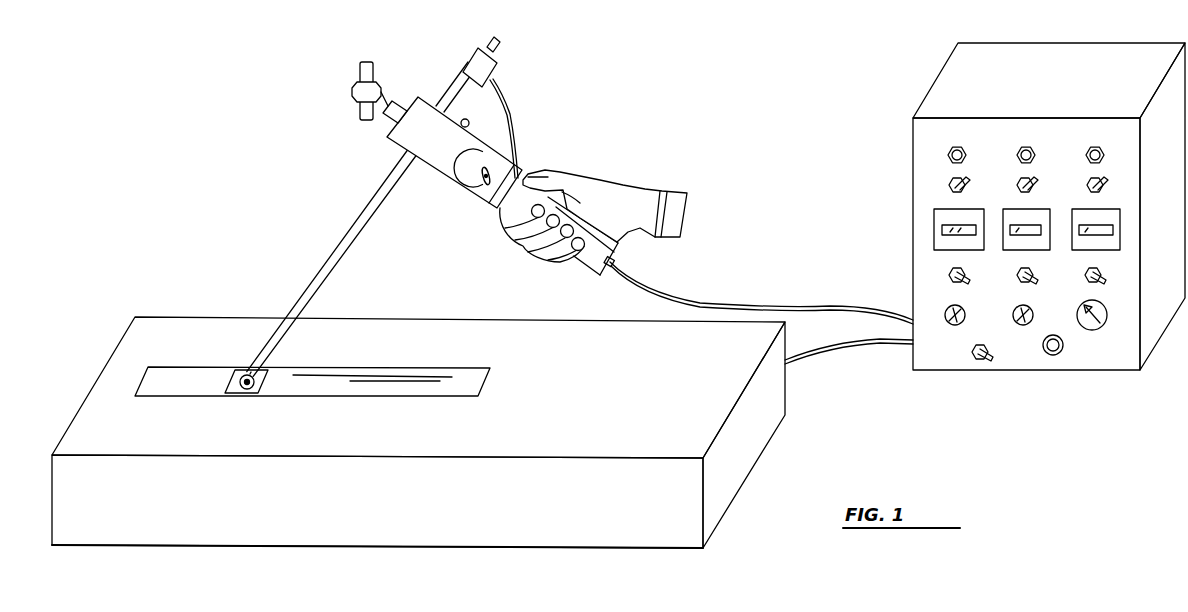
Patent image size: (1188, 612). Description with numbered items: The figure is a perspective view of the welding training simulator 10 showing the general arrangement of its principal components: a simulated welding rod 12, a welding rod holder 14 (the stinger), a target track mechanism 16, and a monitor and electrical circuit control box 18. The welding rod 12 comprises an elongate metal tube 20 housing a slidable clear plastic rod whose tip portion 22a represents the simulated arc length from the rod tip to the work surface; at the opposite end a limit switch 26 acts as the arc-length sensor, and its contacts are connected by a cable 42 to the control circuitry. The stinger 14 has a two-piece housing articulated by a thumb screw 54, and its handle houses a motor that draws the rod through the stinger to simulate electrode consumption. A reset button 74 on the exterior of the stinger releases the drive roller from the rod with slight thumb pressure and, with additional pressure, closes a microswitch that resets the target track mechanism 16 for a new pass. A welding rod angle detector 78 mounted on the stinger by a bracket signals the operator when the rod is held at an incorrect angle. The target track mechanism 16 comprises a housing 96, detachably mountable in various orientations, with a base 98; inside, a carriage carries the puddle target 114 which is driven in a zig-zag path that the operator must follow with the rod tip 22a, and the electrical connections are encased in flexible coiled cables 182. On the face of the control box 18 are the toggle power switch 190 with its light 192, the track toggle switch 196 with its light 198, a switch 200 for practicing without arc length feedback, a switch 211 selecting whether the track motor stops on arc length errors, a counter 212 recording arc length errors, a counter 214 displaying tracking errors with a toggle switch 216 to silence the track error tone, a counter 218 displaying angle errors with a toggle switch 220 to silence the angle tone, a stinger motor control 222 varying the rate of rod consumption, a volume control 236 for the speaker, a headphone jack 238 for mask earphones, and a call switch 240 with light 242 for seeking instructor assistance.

The welding training simulator 10 is at (580, 205).
The simulated welding rod 12 is at (332, 262).
The welding rod holder 14 is at (584, 272).
The target track mechanism 16 is at (418, 432).
The monitor and electrical circuit control box 18 is at (910, 112).
The elongate metal tube 20 is at (308, 290).
The tip portion 22a is at (248, 372).
The limit switch 26 is at (492, 60).
The cable 42 is at (510, 134).
The thumb screw 54 is at (480, 186).
The reset button 74 is at (470, 120).
The welding rod angle detector 78 is at (367, 54).
The housing 96 is at (598, 410).
The base 98 is at (613, 549).
The puddle target 114 is at (245, 389).
The flexible coiled cables 182 is at (858, 350).
The toggle power switch 190 is at (1105, 187).
The light 192 is at (1108, 130).
The track toggle switch 196 is at (1036, 187).
The light 198 is at (1036, 130).
The switch 200 is at (946, 275).
The switch 211 is at (977, 363).
The counter 212 is at (934, 224).
The counter 214 is at (1048, 243).
The toggle switch 216 is at (1024, 283).
The counter 218 is at (1120, 232).
The toggle switch 220 is at (1107, 275).
The stinger motor control 222 is at (965, 325).
The volume control 236 is at (1107, 310).
The headphone jack 238 is at (1063, 345).
The call switch 240 is at (948, 185).
The light 242 is at (965, 130).